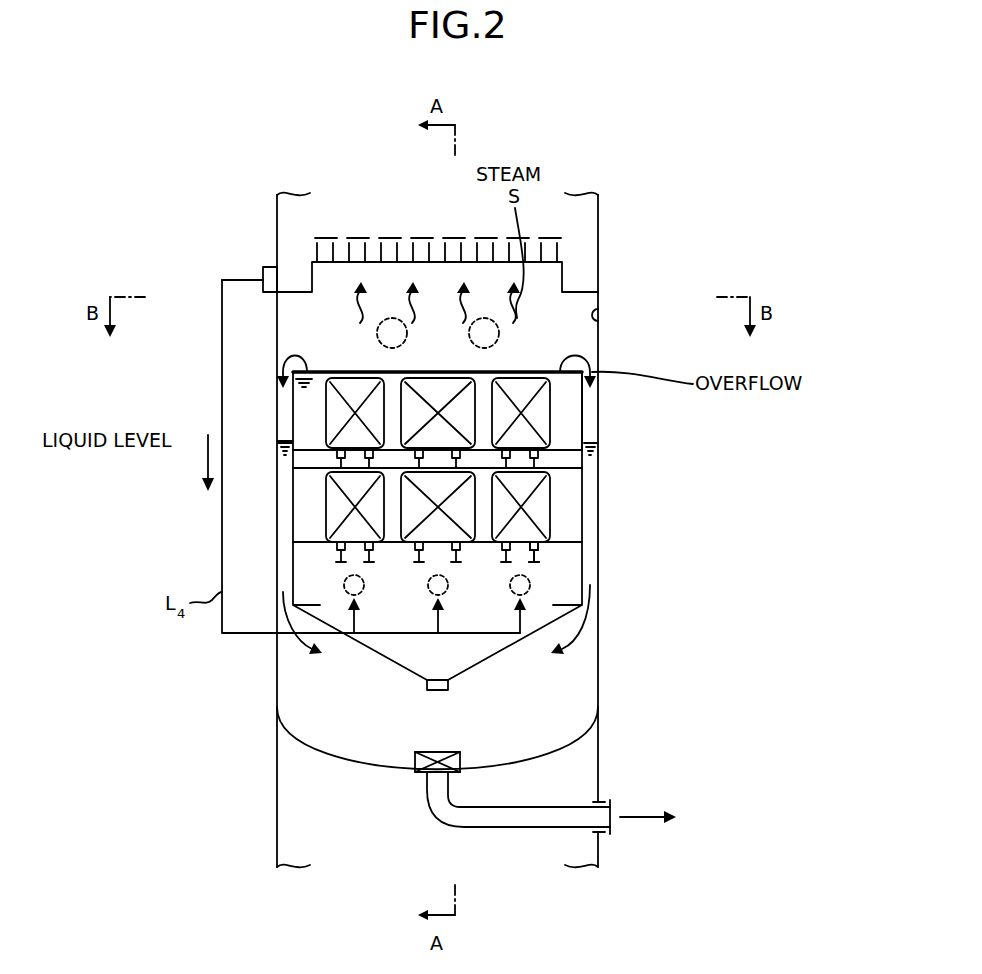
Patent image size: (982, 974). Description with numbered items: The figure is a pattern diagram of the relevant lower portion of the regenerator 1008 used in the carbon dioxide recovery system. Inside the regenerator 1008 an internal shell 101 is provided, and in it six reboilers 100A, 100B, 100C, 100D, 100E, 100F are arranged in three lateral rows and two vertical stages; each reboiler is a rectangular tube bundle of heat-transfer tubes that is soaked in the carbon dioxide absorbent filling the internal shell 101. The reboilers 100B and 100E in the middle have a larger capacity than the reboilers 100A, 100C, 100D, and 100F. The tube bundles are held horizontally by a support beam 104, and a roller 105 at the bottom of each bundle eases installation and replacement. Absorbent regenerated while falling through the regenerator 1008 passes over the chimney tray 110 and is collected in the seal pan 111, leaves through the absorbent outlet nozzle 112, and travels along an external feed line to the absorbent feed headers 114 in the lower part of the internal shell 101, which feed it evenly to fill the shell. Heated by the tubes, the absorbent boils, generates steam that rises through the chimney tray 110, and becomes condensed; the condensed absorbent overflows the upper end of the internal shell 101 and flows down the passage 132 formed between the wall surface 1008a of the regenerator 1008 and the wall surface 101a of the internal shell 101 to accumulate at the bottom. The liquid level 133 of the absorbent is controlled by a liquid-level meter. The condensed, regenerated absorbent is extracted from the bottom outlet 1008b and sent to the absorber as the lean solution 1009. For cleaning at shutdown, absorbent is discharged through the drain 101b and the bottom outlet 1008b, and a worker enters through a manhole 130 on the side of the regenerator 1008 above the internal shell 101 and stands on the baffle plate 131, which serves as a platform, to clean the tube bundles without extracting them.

The regenerator 1008 is at (606, 214).
The wall surface of the regenerator 1008a is at (602, 316).
The bottom outlet 1008b is at (612, 803).
The lean solution 1009 is at (647, 818).
The internal shell 101 is at (514, 660).
The wall surface of the internal shell 101a is at (592, 438).
The drain 101b is at (448, 686).
The support beam 104 is at (535, 560).
The roller 105 is at (540, 537).
The chimney tray 110 is at (355, 237).
The seal pan 111 is at (598, 282).
The absorbent outlet nozzle 112 is at (265, 267).
The absorbent feed headers 114 is at (530, 585).
The manhole 130 is at (392, 318).
The baffle plate 131 is at (573, 462).
The passage 132 is at (593, 408).
The liquid level 133 is at (283, 440).
The reboiler 100A is at (333, 410).
The reboiler 100B is at (432, 372).
The reboiler 100C is at (520, 372).
The reboiler 100D is at (333, 503).
The reboiler 100E is at (437, 540).
The reboiler 100F is at (540, 497).